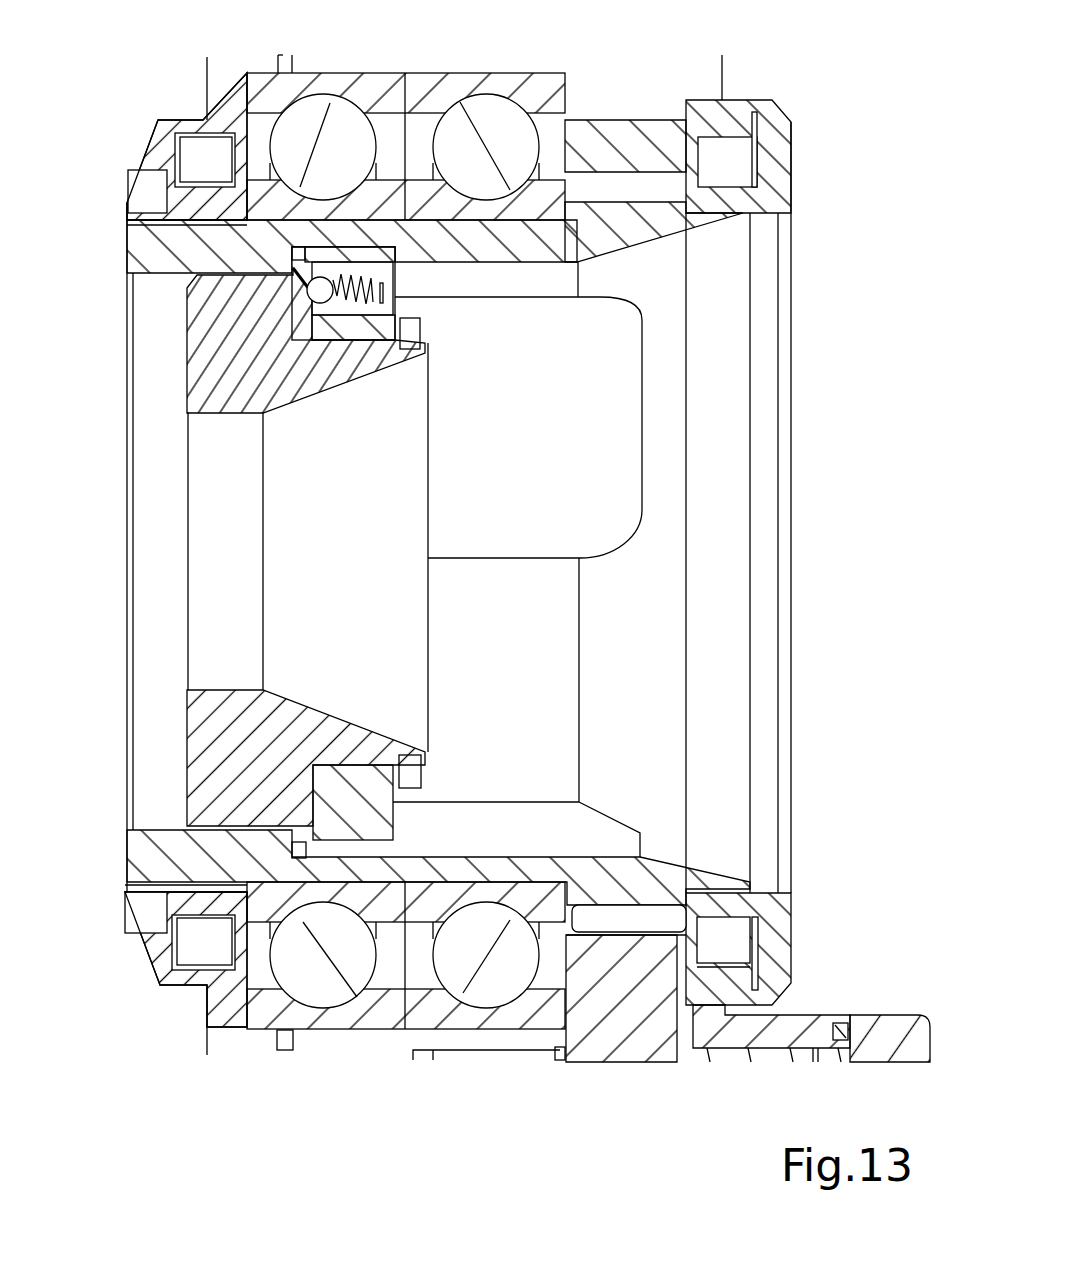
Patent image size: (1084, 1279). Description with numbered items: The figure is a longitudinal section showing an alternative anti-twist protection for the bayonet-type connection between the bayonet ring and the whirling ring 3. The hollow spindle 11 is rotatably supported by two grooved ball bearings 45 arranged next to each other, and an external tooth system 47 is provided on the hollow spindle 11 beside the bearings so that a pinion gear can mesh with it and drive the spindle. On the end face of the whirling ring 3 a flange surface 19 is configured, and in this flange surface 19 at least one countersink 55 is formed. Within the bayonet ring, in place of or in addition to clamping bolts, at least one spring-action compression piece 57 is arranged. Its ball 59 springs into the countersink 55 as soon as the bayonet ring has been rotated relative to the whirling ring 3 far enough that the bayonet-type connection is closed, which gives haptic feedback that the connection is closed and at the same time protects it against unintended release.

The whirling ring 3 is at (190, 299).
The hollow spindle 11 is at (140, 253).
The flange surface 19 is at (300, 295).
The grooved ball bearings 45 is at (330, 107).
The external tooth system 47 is at (677, 193).
The countersink 55 is at (258, 267).
The spring-action compression piece 57 is at (395, 308).
The ball 59 is at (321, 294).